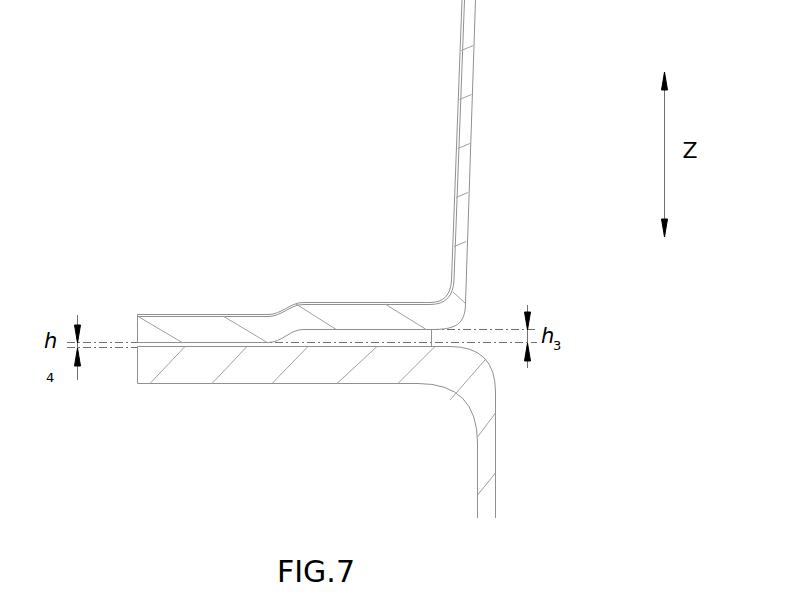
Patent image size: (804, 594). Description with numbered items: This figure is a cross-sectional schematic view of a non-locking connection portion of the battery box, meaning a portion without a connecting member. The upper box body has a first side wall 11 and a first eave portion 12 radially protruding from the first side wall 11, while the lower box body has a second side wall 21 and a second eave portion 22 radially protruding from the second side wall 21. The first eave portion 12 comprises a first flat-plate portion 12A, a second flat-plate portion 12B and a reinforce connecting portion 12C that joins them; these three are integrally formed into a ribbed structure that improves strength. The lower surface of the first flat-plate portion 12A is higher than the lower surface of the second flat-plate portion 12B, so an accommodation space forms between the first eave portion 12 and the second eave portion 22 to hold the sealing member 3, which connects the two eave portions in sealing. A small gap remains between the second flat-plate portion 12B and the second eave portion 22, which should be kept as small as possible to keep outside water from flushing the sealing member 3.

The sealing member 3 is at (361, 428).
The first side wall 11 is at (465, 132).
The first eave portion 12 is at (285, 266).
The first flat-plate portion 12A is at (377, 318).
The second flat-plate portion 12B is at (203, 284).
The reinforce connecting portion 12C is at (292, 320).
The second side wall 21 is at (488, 459).
The second eave portion 22 is at (245, 363).